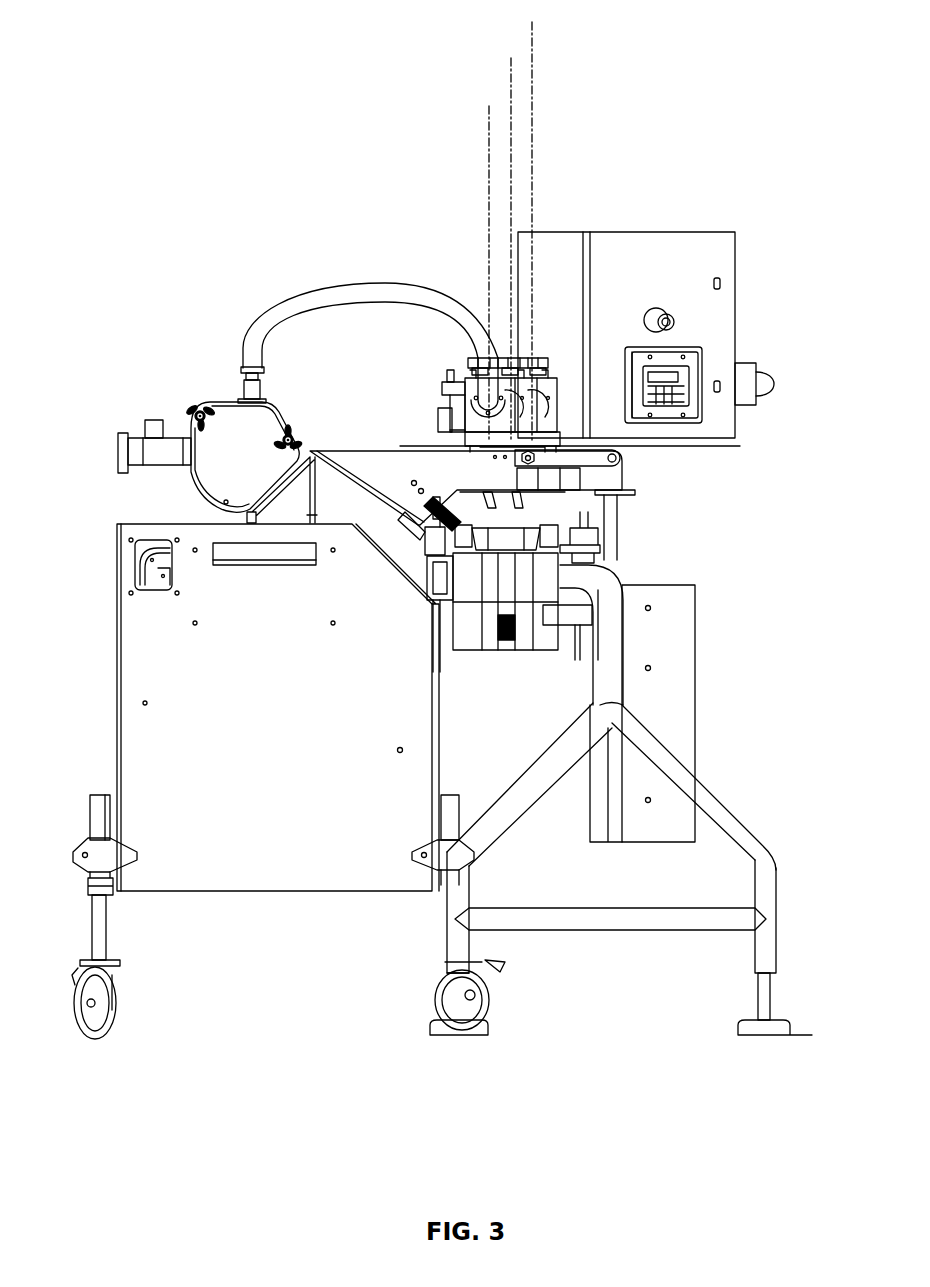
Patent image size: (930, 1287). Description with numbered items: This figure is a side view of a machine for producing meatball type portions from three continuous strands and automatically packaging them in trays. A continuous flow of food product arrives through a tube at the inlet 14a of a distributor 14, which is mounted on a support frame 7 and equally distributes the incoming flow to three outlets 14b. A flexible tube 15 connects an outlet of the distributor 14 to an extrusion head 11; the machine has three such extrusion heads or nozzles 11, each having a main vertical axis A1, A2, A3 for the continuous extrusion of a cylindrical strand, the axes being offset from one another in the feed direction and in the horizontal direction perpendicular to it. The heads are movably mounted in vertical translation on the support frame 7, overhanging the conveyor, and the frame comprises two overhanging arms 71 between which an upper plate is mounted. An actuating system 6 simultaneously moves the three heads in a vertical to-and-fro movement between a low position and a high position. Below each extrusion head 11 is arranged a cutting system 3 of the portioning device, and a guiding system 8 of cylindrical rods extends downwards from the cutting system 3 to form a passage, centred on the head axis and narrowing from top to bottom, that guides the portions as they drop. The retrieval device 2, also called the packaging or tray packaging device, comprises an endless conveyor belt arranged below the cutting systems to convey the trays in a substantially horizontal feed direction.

The retrieval device 2 is at (562, 566).
The cutting system 3 is at (585, 480).
The actuating system 6 is at (426, 416).
The support frame 7 is at (125, 640).
The guiding system 8 is at (530, 508).
The extrusion head 11 is at (467, 358).
The distributor 14 is at (200, 406).
The inlet of the distributor 14a is at (118, 452).
The outlet of the distributor 14b is at (243, 397).
The flexible tube 15 is at (338, 293).
The overhanging arm 71 is at (372, 456).
The main vertical axis A1 is at (536, 220).
The main vertical axis A2 is at (508, 234).
The main vertical axis A3 is at (486, 258).